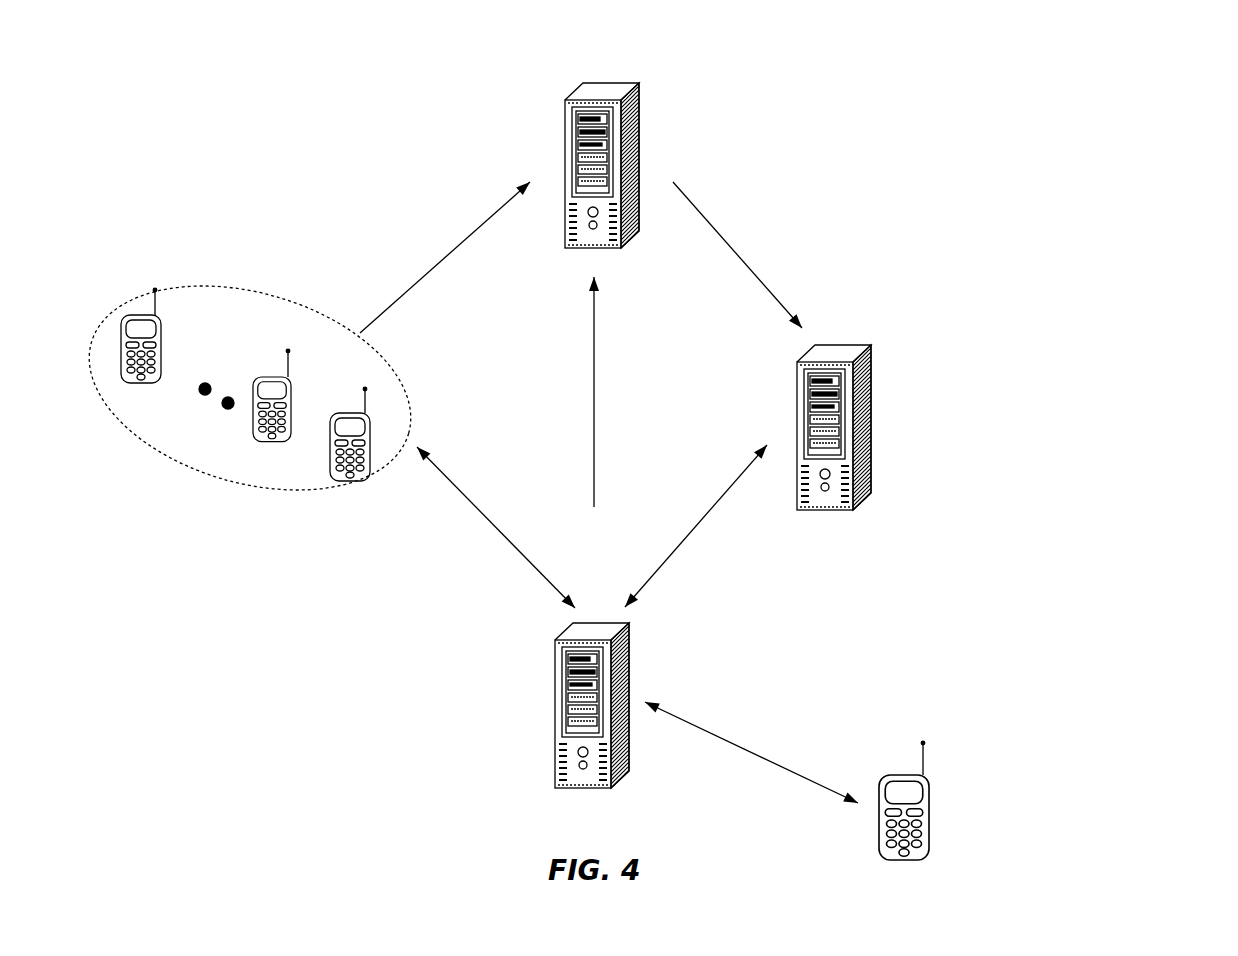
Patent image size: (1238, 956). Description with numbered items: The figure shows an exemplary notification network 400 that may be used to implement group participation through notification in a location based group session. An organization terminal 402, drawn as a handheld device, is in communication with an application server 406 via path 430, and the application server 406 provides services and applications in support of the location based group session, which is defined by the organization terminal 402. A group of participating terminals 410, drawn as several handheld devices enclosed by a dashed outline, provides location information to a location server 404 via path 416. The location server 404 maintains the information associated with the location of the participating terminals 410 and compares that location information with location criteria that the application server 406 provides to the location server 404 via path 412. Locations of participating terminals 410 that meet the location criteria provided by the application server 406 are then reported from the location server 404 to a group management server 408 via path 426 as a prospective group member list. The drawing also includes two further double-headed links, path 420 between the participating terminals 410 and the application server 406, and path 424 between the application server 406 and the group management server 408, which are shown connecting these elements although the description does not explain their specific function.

The notification network 400 is at (1100, 177).
The organization terminal 402 is at (907, 860).
The location server 404 is at (602, 82).
The application server 406 is at (577, 790).
The group management server 408 is at (832, 340).
The participating terminals 410 is at (205, 467).
The path 412 is at (595, 390).
The path 416 is at (452, 250).
The communication link 420 is at (513, 542).
The communication link 424 is at (697, 525).
The path 426 is at (722, 235).
The path 430 is at (755, 753).